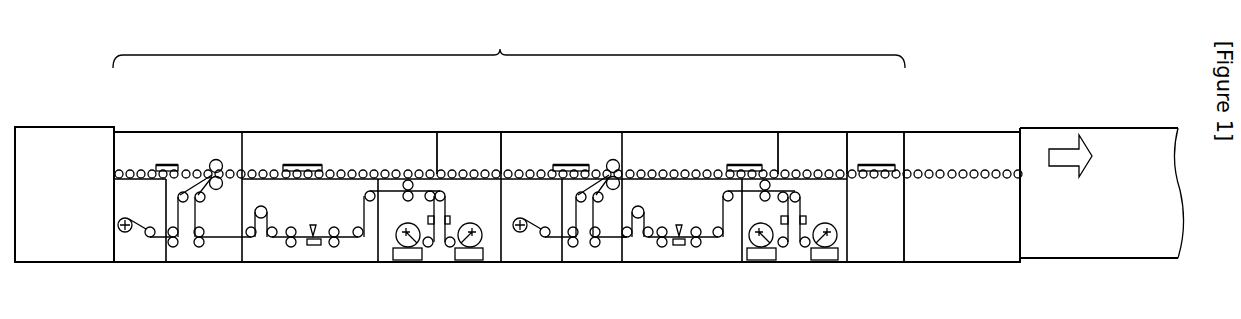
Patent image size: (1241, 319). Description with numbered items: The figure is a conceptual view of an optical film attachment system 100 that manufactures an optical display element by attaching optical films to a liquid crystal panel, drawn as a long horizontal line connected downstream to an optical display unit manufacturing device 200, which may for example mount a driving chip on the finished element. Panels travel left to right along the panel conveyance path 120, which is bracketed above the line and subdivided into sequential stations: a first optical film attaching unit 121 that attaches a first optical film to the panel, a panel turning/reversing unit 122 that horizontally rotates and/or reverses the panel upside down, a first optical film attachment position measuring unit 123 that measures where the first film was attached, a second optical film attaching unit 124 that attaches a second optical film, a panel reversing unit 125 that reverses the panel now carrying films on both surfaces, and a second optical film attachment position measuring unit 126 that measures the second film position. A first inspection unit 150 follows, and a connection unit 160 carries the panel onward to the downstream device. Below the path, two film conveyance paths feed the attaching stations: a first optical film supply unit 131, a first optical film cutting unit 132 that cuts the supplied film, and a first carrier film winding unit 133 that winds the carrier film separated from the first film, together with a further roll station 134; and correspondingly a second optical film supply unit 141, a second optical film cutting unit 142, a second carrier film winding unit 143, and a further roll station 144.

The optical film attachment system 100 is at (48, 209).
The optical display unit manufacturing device 200 is at (1116, 212).
The panel conveyance path 120 is at (509, 43).
The first optical film attaching unit 121 is at (189, 130).
The panel turning/reversing unit 122 is at (277, 130).
The first optical film attachment position measuring unit 123 is at (477, 130).
The second optical film attaching unit 124 is at (597, 130).
The panel reversing unit 125 is at (685, 130).
The second optical film attachment position measuring unit 126 is at (811, 130).
The first inspection unit 150 is at (875, 130).
The connection unit 160 is at (957, 264).
The first optical film supply unit 131 is at (432, 264).
The first optical film cutting unit 132 is at (313, 264).
The first carrier film winding unit 133 is at (189, 264).
The first unwinding unit 134 is at (141, 264).
The second optical film supply unit 141 is at (823, 264).
The second optical film cutting unit 142 is at (679, 264).
The second carrier film winding unit 143 is at (583, 264).
The second unwinding unit 144 is at (519, 264).